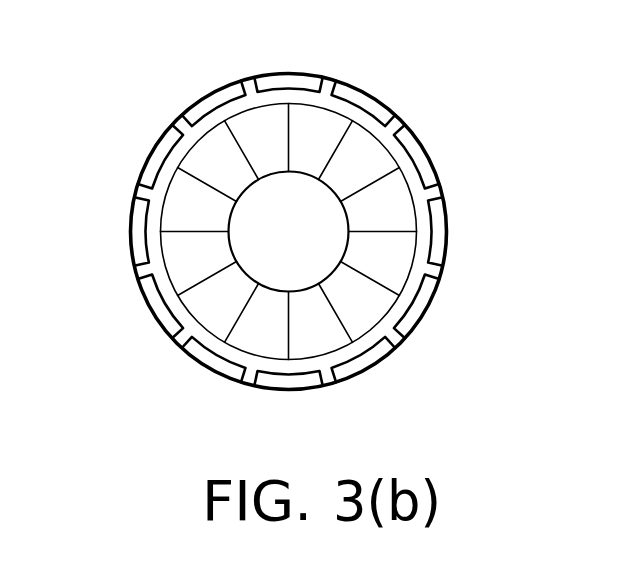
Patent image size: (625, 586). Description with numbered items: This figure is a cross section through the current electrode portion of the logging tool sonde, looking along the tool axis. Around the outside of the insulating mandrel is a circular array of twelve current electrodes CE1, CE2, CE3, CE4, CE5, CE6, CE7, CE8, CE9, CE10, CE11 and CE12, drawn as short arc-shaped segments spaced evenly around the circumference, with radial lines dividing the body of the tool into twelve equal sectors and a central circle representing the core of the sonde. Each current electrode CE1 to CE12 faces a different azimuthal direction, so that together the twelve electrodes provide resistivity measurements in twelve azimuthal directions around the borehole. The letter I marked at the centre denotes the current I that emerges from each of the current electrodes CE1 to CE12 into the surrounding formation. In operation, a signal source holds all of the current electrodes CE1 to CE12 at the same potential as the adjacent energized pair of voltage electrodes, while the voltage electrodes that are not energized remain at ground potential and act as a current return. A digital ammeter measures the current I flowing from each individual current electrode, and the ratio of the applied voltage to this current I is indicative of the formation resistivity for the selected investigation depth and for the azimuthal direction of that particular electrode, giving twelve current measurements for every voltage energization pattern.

The current electrode CE1 is at (375, 97).
The current electrode CE2 is at (433, 160).
The current electrode CE3 is at (448, 233).
The current electrode CE4 is at (428, 312).
The current electrode CE5 is at (370, 377).
The current electrode CE6 is at (258, 387).
The current electrode CE7 is at (203, 366).
The current electrode CE8 is at (153, 315).
The current electrode CE9 is at (130, 243).
The current electrode CE10 is at (151, 152).
The current electrode CE11 is at (202, 100).
The current electrode CE12 is at (287, 73).
The current I is at (297, 246).